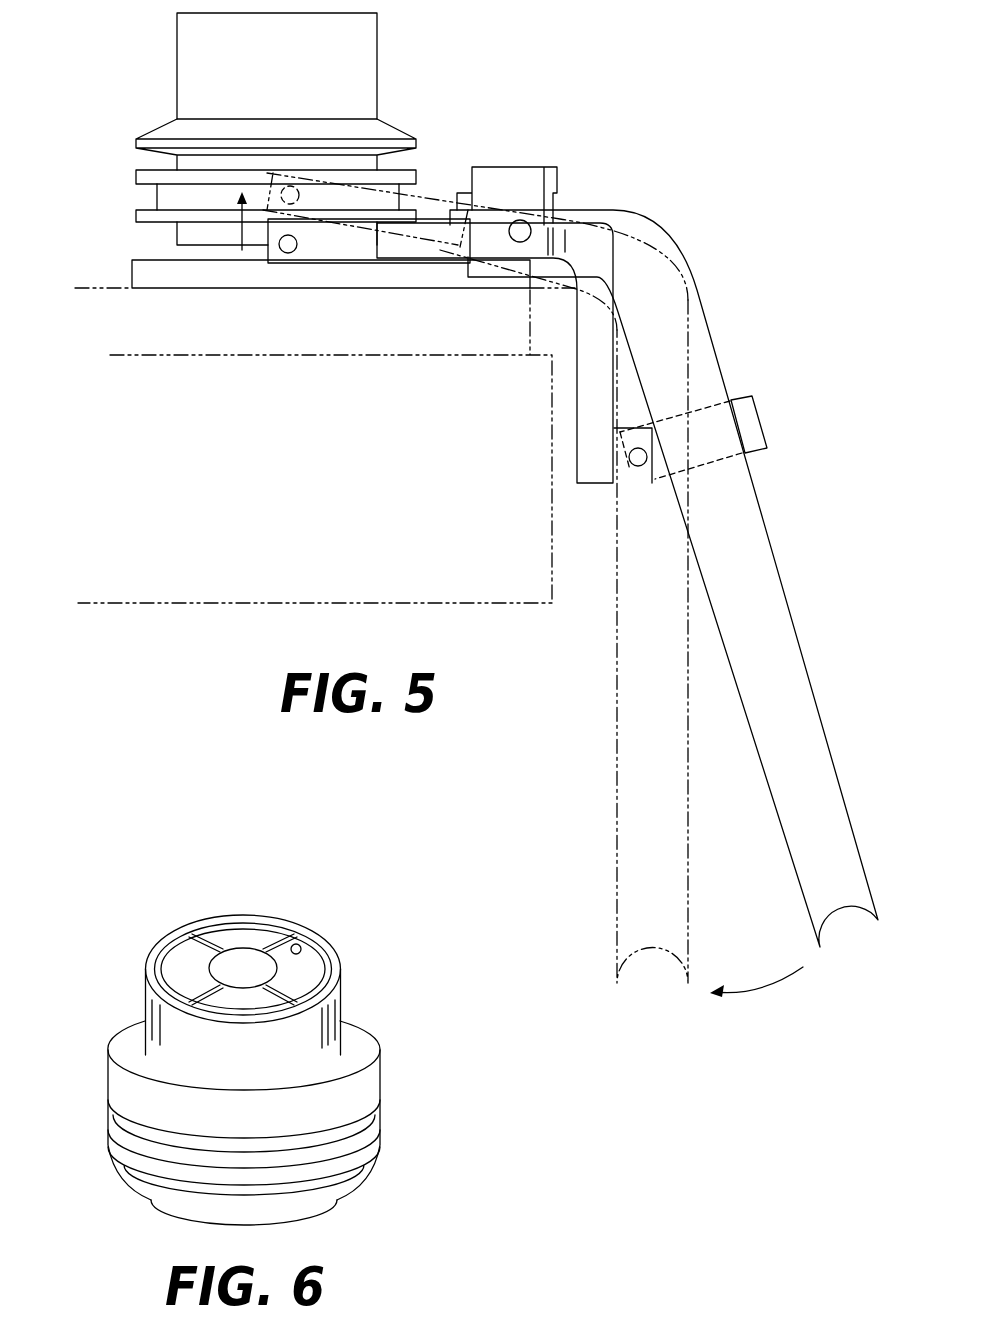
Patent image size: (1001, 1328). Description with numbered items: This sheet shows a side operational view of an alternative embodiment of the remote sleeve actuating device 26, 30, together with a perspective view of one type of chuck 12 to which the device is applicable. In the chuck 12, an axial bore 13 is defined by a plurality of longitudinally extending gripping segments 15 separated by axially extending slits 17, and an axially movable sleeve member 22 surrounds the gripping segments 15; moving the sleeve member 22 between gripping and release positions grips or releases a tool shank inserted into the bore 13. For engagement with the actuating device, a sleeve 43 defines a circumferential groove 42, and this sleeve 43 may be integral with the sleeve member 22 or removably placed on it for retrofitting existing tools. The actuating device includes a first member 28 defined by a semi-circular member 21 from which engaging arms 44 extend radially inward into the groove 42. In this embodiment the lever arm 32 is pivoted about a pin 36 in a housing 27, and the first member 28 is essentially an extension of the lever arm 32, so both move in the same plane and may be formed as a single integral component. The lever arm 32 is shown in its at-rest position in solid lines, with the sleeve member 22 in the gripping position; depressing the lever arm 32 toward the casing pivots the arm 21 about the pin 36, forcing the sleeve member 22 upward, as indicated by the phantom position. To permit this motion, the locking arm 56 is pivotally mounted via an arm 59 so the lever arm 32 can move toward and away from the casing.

In FIG. 6, the chuck 12 is at (84, 1000).
In FIG. 6, the axial bore 13 is at (249, 955).
In FIG. 6, the gripping segments 15 is at (305, 967).
In FIG. 6, the slits 17 is at (300, 948).
In FIG. 5, the semi-circular member 21 is at (320, 247).
In FIG. 5, the sleeve member 22 is at (357, 90).
In FIG. 6, the sleeve member 22 is at (140, 1062).
In FIG. 5, the sleeve actuating device 26 is at (772, 150).
In FIG. 5, the housing 27 is at (540, 187).
In FIG. 5, the first member 28 is at (415, 262).
In FIG. 5, the sleeve actuating device 30 is at (570, 508).
In FIG. 5, the lever arm 32 is at (640, 705).
In FIG. 5, the pin 36 is at (521, 228).
In FIG. 5, the circumferential groove 42 is at (148, 197).
In FIG. 6, the circumferential groove 42 is at (322, 1163).
In FIG. 5, the sleeve 43 is at (138, 178).
In FIG. 6, the sleeve 43 is at (372, 1108).
In FIG. 5, the engaging arms 44 is at (288, 253).
In FIG. 5, the locking arm 56 is at (712, 425).
In FIG. 5, the arm 59 is at (640, 466).